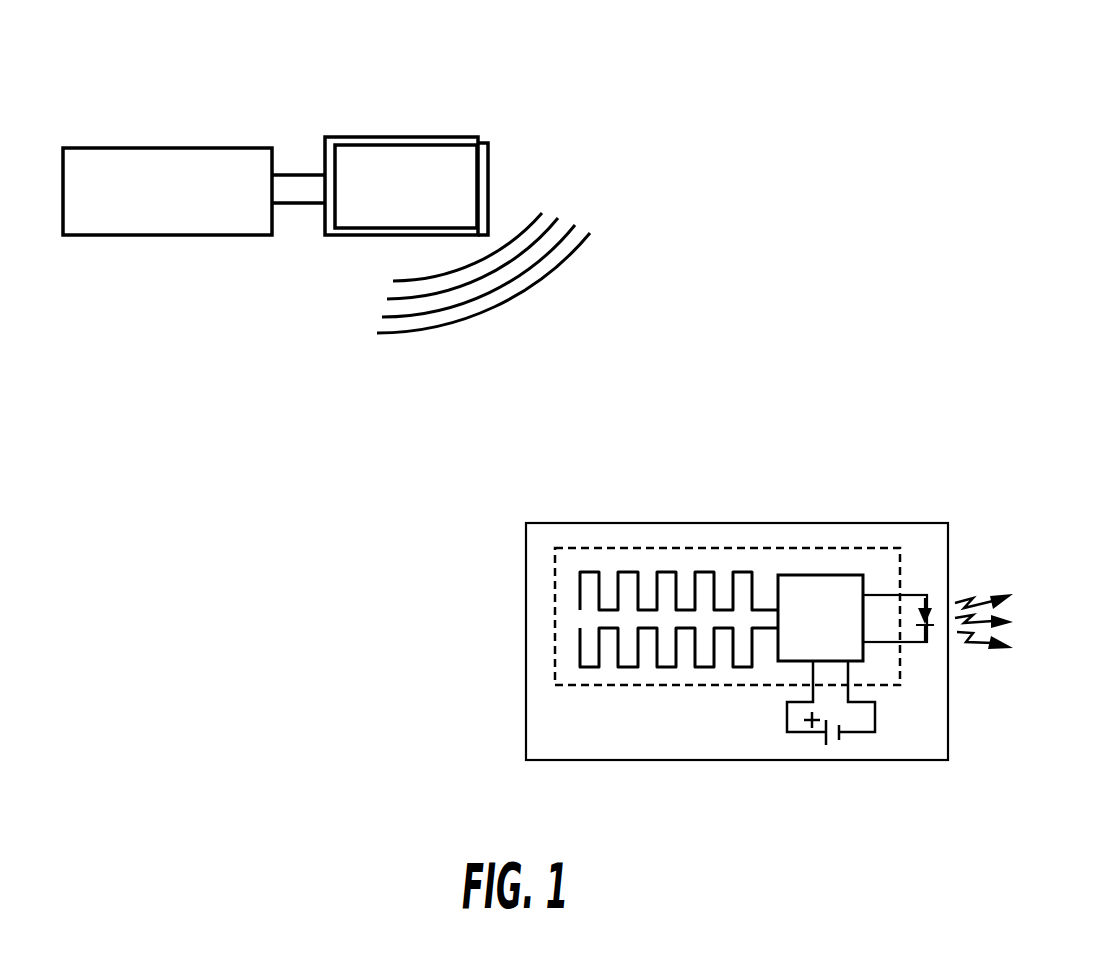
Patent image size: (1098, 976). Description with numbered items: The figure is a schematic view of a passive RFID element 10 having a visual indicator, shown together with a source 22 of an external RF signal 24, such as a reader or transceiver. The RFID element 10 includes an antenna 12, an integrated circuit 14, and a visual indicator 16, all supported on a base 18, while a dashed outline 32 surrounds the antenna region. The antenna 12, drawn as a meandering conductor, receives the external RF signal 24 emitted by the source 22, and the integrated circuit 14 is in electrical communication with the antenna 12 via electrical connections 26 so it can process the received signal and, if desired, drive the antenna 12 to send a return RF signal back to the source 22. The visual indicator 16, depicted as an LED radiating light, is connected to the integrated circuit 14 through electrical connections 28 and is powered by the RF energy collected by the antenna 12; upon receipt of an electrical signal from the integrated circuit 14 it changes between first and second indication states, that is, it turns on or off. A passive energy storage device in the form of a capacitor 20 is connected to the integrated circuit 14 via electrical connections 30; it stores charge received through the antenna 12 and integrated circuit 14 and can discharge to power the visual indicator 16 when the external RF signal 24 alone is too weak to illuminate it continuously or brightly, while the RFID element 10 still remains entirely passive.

The passive RFID element 10 is at (880, 432).
The antenna 12 is at (660, 647).
The integrated circuit 14 is at (848, 575).
The visual indicator 16 is at (930, 600).
The base 18 is at (923, 762).
The capacitor 20 is at (826, 742).
The source 22 is at (284, 100).
The external RF signal 24 is at (508, 307).
The electrical connections 26 is at (768, 625).
The electrical connections 28 is at (880, 635).
The electrical connections 30 is at (815, 678).
The enclosure outline 32 is at (582, 547).